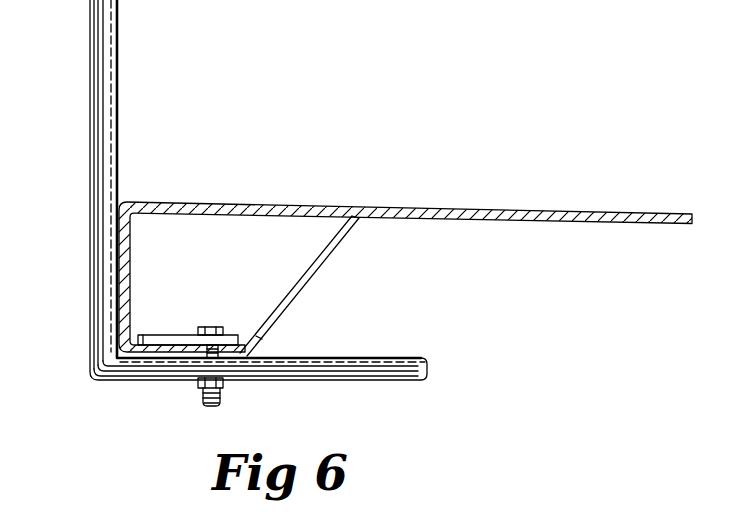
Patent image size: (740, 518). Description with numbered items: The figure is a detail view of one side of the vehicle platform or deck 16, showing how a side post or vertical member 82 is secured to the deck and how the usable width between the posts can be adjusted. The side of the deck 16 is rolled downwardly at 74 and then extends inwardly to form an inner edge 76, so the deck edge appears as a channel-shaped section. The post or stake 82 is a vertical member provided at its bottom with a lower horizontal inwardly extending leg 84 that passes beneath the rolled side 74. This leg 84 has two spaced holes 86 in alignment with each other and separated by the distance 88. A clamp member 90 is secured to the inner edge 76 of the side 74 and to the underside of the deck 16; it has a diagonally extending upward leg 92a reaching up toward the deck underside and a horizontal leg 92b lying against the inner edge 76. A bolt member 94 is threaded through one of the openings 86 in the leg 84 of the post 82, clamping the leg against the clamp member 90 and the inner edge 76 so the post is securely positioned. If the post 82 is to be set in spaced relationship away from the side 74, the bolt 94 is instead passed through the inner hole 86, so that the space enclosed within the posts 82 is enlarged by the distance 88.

The platform or deck 16 is at (200, 203).
The side of the deck 74 is at (118, 264).
The inner edge of the side 76 is at (141, 349).
The side post or vertical member 82 is at (108, 86).
The lower horizontal inwardly extending leg 84 is at (145, 380).
The spaced holes 86 is at (277, 355).
The distance between holes 88 is at (248, 370).
The clamp member 90 is at (265, 312).
The diagonally extending upward leg 92a is at (324, 253).
The horizontal leg 92b is at (163, 336).
The bolt member 94 is at (212, 327).